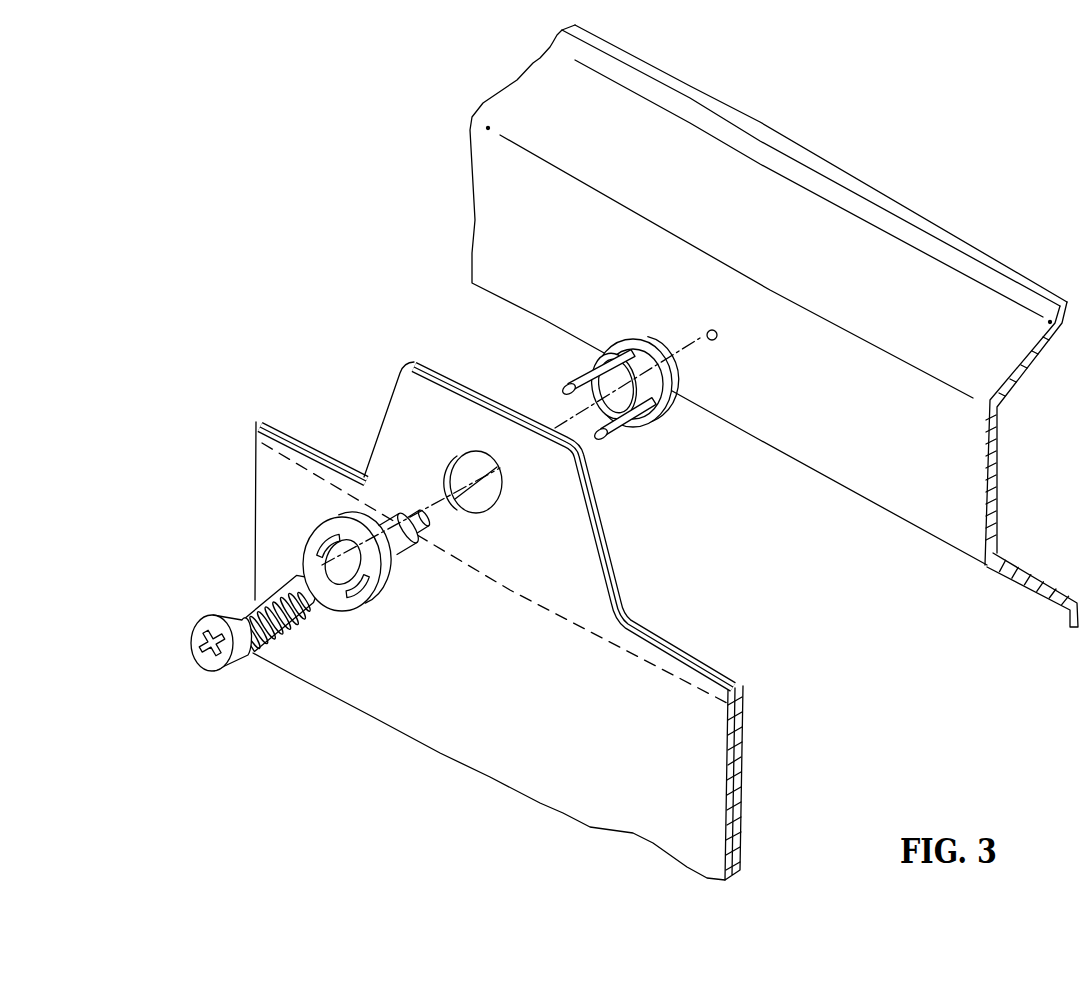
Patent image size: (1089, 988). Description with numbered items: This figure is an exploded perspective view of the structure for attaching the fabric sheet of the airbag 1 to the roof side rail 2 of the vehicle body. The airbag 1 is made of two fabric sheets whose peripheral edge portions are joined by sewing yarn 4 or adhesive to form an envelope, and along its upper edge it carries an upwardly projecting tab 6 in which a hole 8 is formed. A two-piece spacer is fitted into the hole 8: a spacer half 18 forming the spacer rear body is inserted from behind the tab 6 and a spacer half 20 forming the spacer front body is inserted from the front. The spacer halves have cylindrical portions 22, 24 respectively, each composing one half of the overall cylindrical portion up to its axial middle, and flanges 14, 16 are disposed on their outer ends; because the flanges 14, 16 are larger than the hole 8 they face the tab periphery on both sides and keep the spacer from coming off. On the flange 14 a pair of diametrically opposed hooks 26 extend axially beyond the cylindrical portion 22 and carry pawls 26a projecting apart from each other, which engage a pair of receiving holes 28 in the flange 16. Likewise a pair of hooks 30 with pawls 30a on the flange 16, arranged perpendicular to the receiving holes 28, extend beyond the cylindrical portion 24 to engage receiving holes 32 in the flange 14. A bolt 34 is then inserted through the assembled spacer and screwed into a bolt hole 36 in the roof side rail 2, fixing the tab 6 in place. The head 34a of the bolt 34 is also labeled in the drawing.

The airbag 1 is at (598, 806).
The roof side rail 2 is at (995, 500).
The sewing yarn 4 is at (681, 680).
The tab 6 is at (587, 594).
The hole 8 is at (468, 505).
The flange 14 is at (575, 383).
The flange 16 is at (328, 534).
The spacer half 18 is at (609, 394).
The spacer half 20 is at (349, 622).
The cylindrical portion 22 is at (684, 383).
The cylindrical portion 24 is at (398, 556).
The hooks 26 is at (586, 356).
The pawls 26a is at (566, 386).
The receiving holes 28 is at (313, 543).
The hooks 30 is at (383, 479).
The pawls 30a is at (413, 510).
The receiving holes 32 is at (645, 357).
The bolt 34 is at (227, 658).
The screw head 34a is at (208, 675).
The bolt hole 36 is at (708, 328).